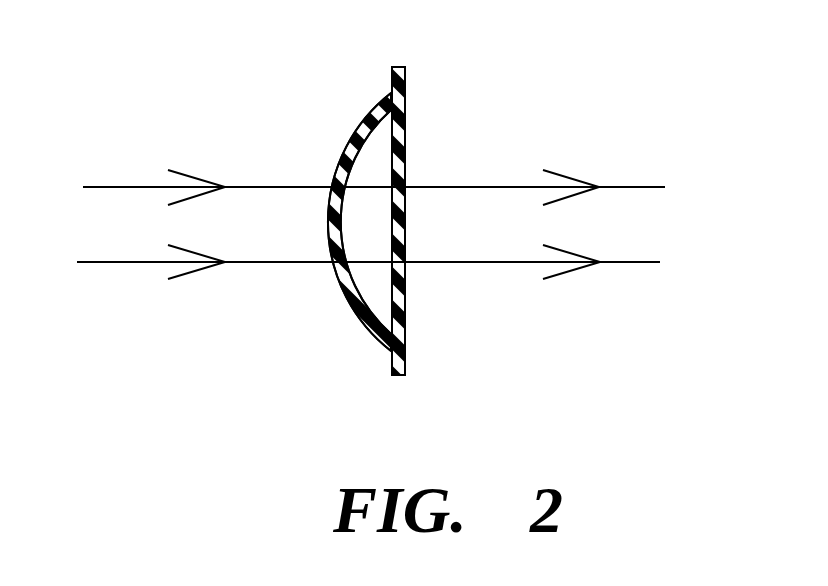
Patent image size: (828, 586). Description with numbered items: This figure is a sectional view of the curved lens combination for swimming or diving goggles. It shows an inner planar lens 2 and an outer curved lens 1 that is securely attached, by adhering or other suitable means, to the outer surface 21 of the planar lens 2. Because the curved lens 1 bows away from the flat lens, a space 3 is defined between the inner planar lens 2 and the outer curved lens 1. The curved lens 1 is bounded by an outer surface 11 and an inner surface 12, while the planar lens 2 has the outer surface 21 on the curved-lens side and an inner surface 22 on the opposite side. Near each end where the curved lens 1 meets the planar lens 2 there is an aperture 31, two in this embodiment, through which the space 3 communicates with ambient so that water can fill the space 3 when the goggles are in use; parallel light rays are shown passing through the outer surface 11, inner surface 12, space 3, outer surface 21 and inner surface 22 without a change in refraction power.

The outer curved lens 1 is at (328, 268).
The outer surface of the curved lens 11 is at (338, 167).
The inner surface of the curved lens 12 is at (336, 277).
The inner planar lens 2 is at (413, 118).
The outer surface of the planar lens 21 is at (393, 148).
The inner surface of the planar lens 22 is at (405, 235).
The space 3 is at (377, 275).
The aperture 31 is at (382, 105).